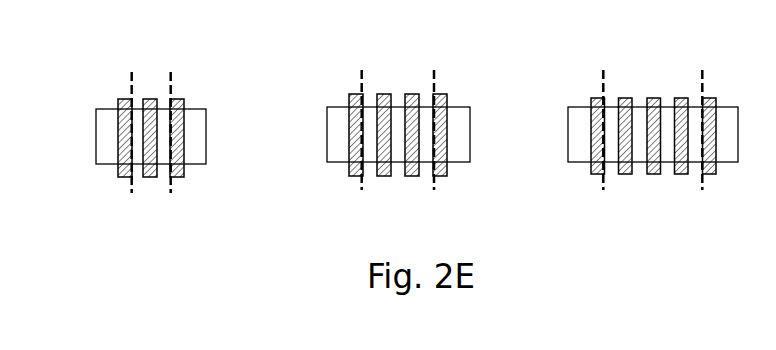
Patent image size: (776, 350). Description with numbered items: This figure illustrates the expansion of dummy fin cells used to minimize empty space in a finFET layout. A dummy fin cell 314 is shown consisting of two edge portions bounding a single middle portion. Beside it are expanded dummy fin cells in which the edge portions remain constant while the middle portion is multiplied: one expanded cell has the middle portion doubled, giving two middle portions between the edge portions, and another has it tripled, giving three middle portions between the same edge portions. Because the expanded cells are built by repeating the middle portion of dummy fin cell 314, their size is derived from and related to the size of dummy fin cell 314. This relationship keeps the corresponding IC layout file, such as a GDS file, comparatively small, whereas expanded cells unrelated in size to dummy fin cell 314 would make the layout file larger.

The dummy fin cell 314 is at (151, 170).